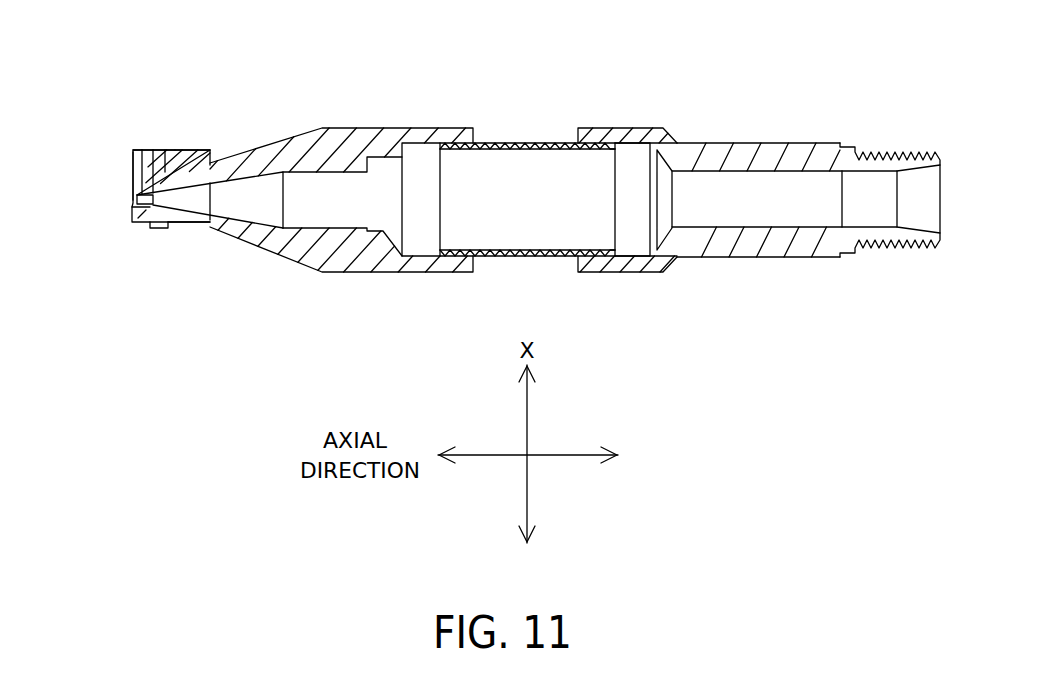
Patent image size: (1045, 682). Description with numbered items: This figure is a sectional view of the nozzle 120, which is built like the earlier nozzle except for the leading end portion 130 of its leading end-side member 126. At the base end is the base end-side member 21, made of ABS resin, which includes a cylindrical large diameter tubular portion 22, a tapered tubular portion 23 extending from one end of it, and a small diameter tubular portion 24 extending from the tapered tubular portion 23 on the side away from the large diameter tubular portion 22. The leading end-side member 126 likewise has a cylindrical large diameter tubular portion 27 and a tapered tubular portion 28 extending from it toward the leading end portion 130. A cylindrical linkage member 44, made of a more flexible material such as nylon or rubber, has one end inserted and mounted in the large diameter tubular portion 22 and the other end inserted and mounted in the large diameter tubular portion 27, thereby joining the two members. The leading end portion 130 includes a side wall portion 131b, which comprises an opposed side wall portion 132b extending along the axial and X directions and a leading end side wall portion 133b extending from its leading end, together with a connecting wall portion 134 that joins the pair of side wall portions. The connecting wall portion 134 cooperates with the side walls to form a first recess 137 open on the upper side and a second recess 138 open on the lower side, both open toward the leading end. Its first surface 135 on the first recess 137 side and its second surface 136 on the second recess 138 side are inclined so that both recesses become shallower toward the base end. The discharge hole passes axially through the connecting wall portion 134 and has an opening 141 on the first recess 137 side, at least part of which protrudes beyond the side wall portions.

The nozzle 120 is at (713, 67).
The leading end-side member 126 is at (358, 112).
The tapered tubular portion 28 is at (272, 240).
The large diameter tubular portion 27 is at (430, 134).
The linkage member 44 is at (550, 147).
The large diameter tubular portion 22 is at (637, 142).
The tapered tubular portion 23 is at (666, 262).
The small diameter tubular portion 24 is at (785, 153).
The base end-side member 21 is at (831, 127).
The leading end portion 130 is at (126, 182).
The side wall portion 131b is at (131, 152).
The leading end side wall portion 133b is at (133, 148).
The first recess 137 is at (152, 157).
The opposed side wall portion 132b is at (170, 157).
The first surface 135 is at (190, 153).
The opening 141 is at (133, 203).
The connecting wall portion 134 is at (133, 215).
The second recess 138 is at (157, 231).
The second surface 136 is at (170, 230).